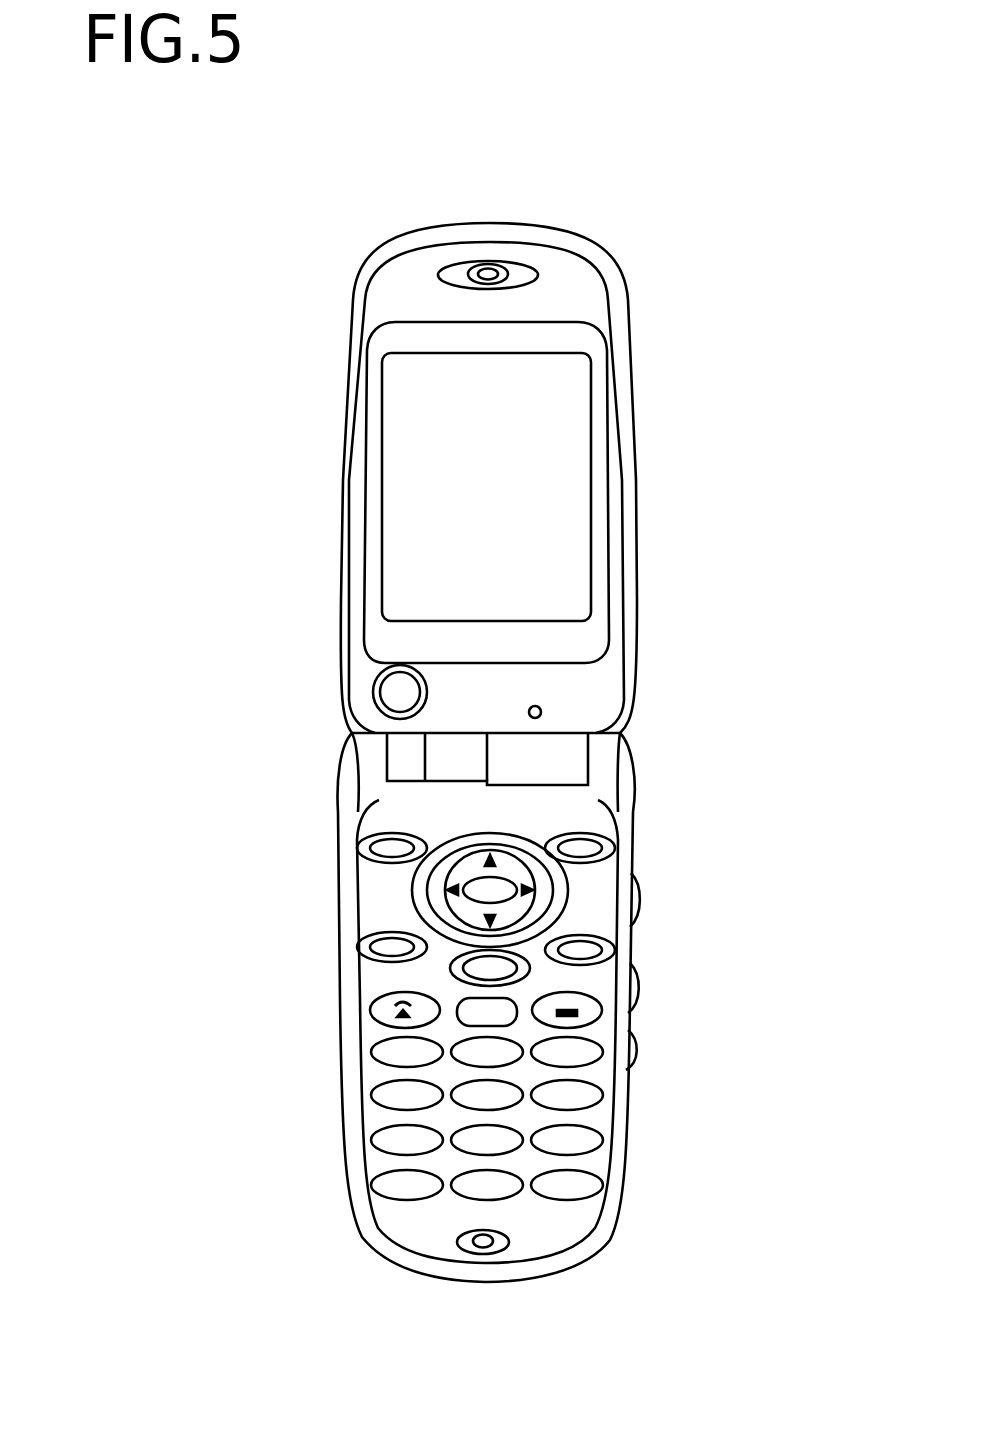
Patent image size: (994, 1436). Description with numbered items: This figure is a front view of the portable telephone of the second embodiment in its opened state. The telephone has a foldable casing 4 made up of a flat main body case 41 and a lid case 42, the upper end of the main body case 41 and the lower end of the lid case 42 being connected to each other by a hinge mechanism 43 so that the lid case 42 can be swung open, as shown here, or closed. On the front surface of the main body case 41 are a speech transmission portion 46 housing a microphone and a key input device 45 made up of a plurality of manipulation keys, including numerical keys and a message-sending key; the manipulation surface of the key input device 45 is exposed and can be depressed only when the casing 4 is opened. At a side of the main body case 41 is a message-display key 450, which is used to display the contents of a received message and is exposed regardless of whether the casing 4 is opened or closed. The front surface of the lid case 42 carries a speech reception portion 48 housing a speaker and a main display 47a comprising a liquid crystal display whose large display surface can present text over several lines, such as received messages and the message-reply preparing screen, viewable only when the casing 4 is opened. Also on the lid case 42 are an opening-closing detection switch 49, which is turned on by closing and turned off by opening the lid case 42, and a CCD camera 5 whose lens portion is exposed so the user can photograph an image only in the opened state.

The casing 4 is at (241, 675).
The main body case 41 is at (341, 816).
The lid case 42 is at (341, 680).
The hinge mechanism 43 is at (563, 768).
The key input device 45 is at (600, 1098).
The message-display key 450 is at (640, 905).
The speech transmission portion 46 is at (498, 1251).
The main display 47a is at (563, 537).
The speech reception portion 48 is at (497, 268).
The opening-closing detection switch 49 is at (541, 712).
The CCD camera 5 is at (393, 684).